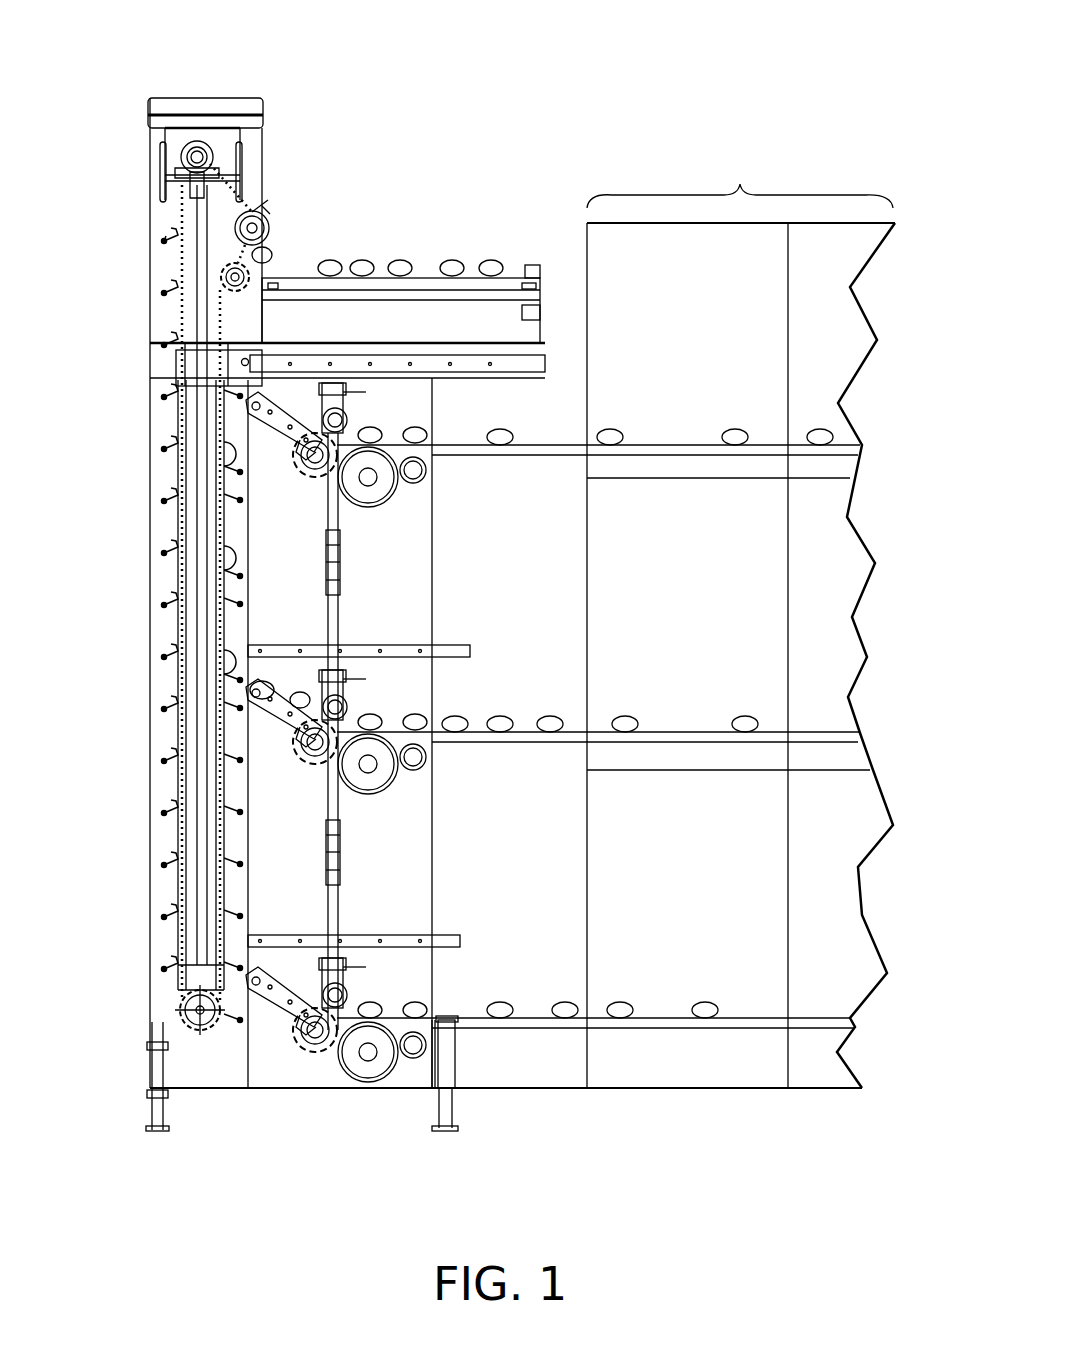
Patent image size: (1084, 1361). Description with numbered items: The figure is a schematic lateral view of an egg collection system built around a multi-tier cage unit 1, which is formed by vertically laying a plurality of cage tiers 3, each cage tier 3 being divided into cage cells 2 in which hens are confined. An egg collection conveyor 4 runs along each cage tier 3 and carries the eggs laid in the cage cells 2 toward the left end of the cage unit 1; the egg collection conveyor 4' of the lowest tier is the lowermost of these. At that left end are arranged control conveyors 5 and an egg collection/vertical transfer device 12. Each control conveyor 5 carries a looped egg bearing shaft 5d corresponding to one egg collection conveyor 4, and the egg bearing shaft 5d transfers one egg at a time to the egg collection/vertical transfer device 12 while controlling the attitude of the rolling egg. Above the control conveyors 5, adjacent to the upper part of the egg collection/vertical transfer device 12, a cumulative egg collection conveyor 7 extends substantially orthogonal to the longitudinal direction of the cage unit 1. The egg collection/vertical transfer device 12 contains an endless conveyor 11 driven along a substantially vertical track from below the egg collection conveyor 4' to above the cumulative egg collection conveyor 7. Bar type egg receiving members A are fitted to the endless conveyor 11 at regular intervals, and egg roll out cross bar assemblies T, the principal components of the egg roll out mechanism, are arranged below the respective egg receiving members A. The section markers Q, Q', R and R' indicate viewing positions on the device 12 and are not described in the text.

The multi-tier cage unit 1 is at (497, 1102).
The cage cell 2 is at (702, 350).
The cage tier 3 is at (740, 173).
The egg collection conveyor 4 is at (603, 563).
The egg collection conveyor of the lowest tier 4' is at (596, 977).
The control conveyor 5 is at (278, 472).
The looped egg bearing shaft 5d is at (280, 681).
The cumulative egg collection conveyor 7 is at (352, 238).
The endless conveyor 11 is at (175, 416).
The egg collection/vertical transfer device 12 is at (277, 163).
The section line Q is at (106, 203).
The section line Q' is at (175, 53).
The section line R is at (114, 342).
The section line R' is at (300, 57).
The egg roll out cross bar assembly T is at (178, 640).
The bar type egg receiving member A is at (178, 652).